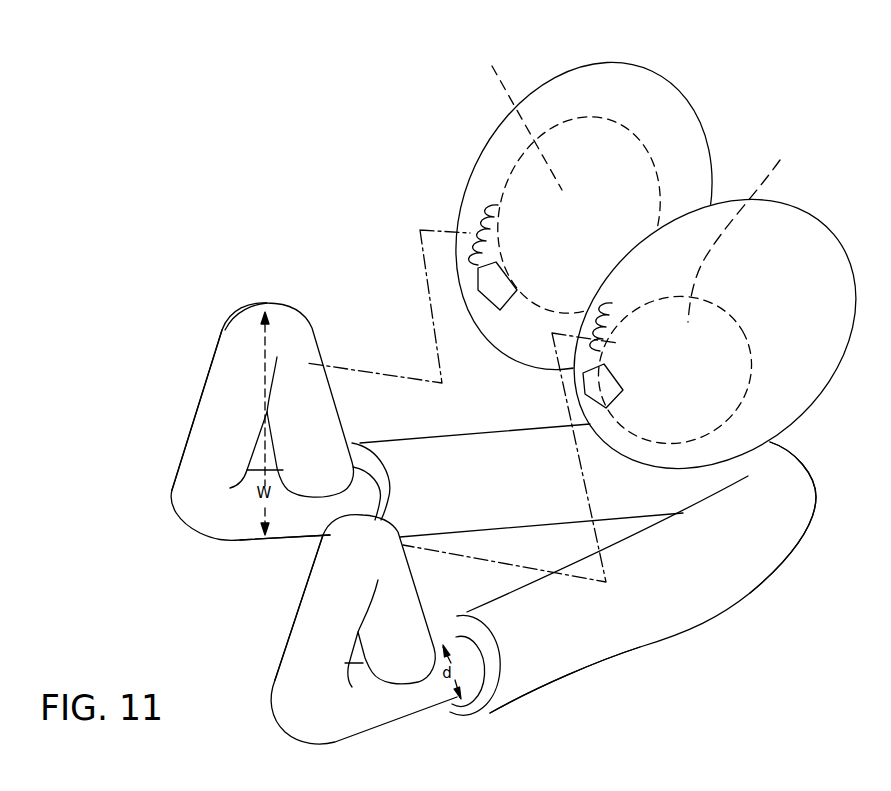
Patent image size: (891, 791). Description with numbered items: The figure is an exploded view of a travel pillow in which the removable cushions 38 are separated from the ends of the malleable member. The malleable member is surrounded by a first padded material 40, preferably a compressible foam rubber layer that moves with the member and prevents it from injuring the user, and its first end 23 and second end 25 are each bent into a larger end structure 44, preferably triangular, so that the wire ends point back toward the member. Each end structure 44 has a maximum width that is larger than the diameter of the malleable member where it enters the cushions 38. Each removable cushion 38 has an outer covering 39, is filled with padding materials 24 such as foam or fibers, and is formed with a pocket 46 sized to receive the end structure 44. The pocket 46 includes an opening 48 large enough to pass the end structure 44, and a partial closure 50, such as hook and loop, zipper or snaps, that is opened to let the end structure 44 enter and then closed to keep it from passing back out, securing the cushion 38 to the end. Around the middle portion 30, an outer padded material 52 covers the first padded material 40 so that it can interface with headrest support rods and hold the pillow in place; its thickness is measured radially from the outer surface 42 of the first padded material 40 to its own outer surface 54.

The first end 23 is at (300, 277).
The padded layer 24 is at (590, 92).
The second end 25 is at (432, 598).
The middle portion 30 is at (812, 458).
The removable cushions 38 is at (682, 104).
The outer covering 39 is at (559, 76).
The first padded material 40 is at (227, 334).
The outer surface 42 is at (310, 561).
The end structure 44 is at (177, 418).
The pocket 46 is at (633, 182).
The opening 48 is at (465, 220).
The partial closure 50 is at (492, 288).
The outer padded material 52 is at (660, 619).
The outer surface 54 is at (803, 527).